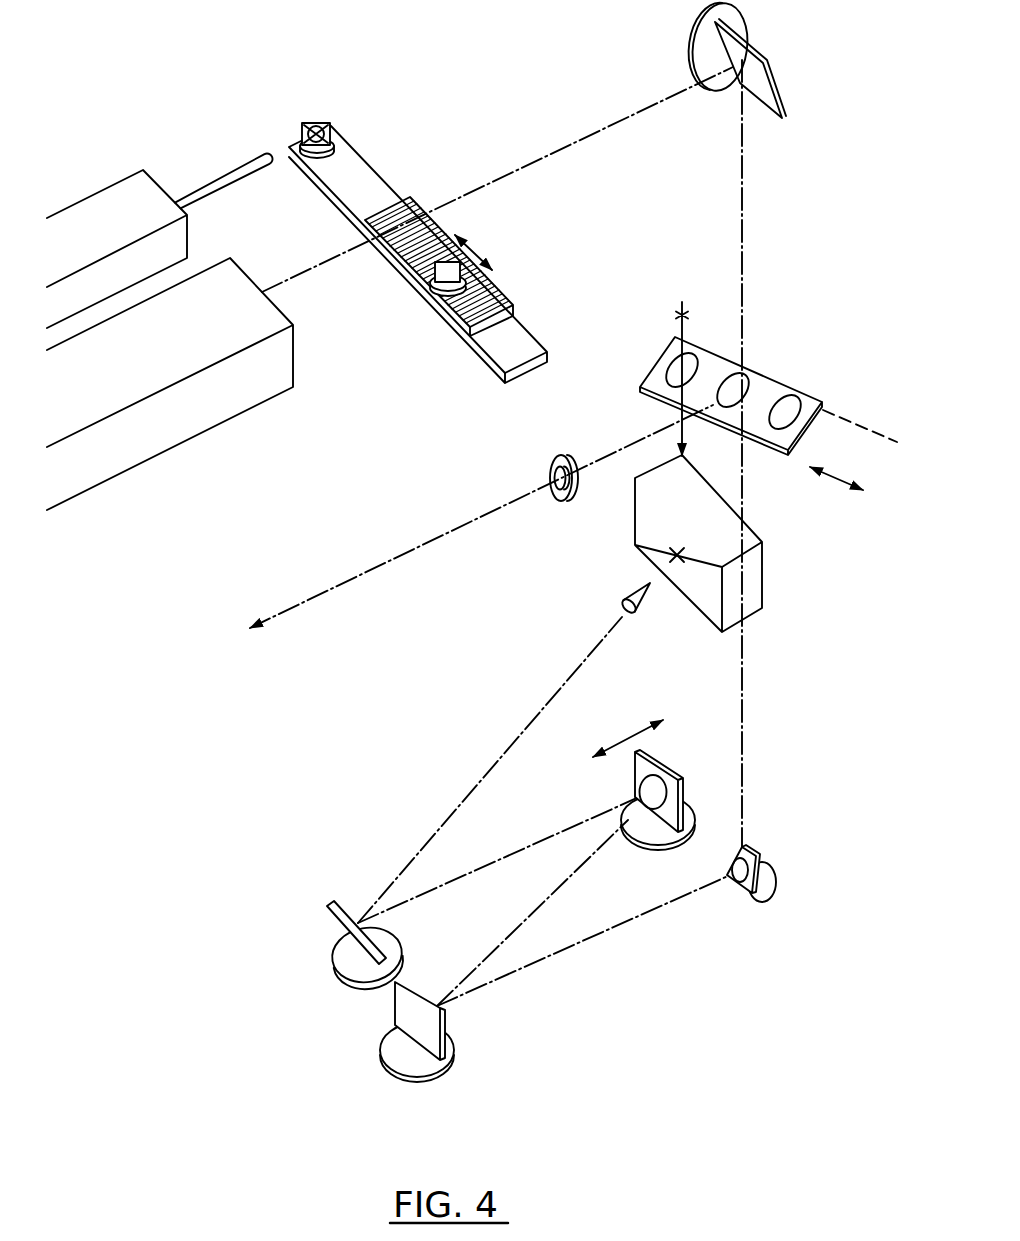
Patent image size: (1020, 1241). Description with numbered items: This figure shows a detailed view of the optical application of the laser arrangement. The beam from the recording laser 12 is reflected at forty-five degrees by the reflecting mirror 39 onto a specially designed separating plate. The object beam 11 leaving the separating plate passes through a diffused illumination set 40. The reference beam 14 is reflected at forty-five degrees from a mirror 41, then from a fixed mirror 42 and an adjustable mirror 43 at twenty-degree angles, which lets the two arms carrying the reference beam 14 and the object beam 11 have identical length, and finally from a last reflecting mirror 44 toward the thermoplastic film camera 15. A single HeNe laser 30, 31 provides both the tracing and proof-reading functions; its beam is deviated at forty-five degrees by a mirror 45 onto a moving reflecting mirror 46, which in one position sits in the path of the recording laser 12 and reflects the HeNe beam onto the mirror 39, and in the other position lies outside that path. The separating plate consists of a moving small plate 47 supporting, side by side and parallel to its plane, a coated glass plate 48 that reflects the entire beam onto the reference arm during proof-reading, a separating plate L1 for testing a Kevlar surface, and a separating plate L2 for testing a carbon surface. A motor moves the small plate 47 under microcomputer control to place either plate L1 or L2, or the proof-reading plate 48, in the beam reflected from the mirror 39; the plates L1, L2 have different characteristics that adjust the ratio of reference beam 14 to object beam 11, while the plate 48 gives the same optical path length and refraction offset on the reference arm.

The object beam 11 is at (325, 590).
The recording laser 12 is at (186, 421).
The reference beam 14 is at (475, 790).
The thermoplastic film camera 15 is at (640, 565).
The HeNe laser 30 is at (122, 197).
The HeNe laser 31 is at (122, 197).
The reflecting mirror 39 is at (777, 93).
The diffused illumination set 40 is at (553, 505).
The mirror 41 is at (742, 890).
The fixed reflecting mirror 42 is at (410, 1007).
The adjustable reflecting mirror 43 is at (670, 802).
The last reflecting mirror 44 is at (340, 923).
The mirror 45 is at (323, 130).
The moving reflecting mirror 46 is at (450, 270).
The moving small plate 47 is at (783, 372).
The coated glass plate 48 is at (688, 362).
The separating plate L1 is at (745, 382).
The separating plate L2 is at (787, 407).